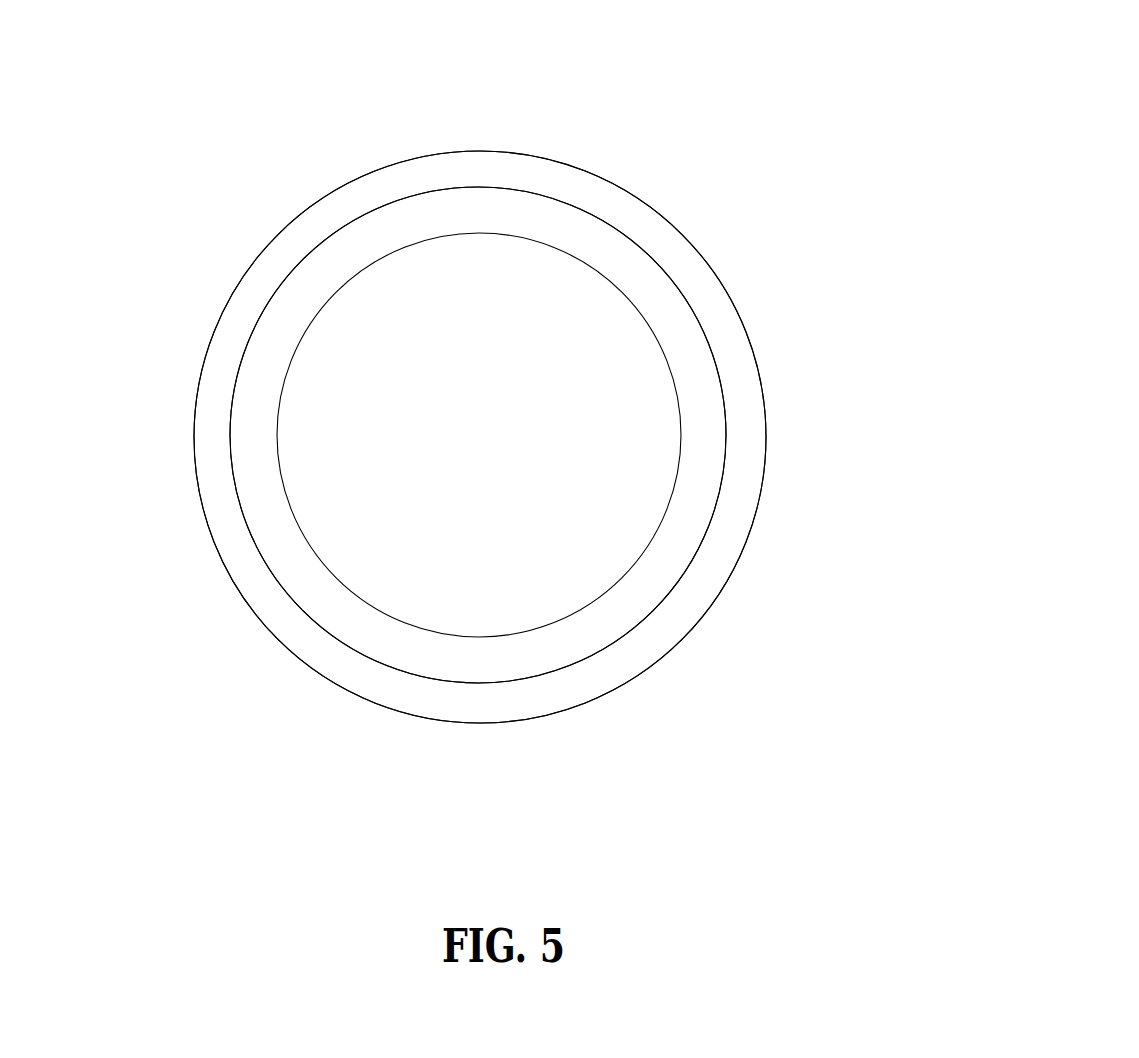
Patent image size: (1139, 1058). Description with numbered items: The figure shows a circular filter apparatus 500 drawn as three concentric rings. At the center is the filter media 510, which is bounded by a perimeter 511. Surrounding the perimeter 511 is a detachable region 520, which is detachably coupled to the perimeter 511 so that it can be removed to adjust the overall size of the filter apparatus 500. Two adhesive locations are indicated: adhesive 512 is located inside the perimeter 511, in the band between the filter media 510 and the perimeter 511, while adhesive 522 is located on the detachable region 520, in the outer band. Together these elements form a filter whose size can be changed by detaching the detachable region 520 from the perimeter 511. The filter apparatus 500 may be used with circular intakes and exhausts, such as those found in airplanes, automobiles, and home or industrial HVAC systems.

The filter apparatus 500 is at (1032, 67).
The filter media 510 is at (479, 435).
The perimeter 511 is at (718, 380).
The adhesive 512 is at (702, 420).
The detachable region 520 is at (765, 463).
The adhesive 522 is at (740, 507).